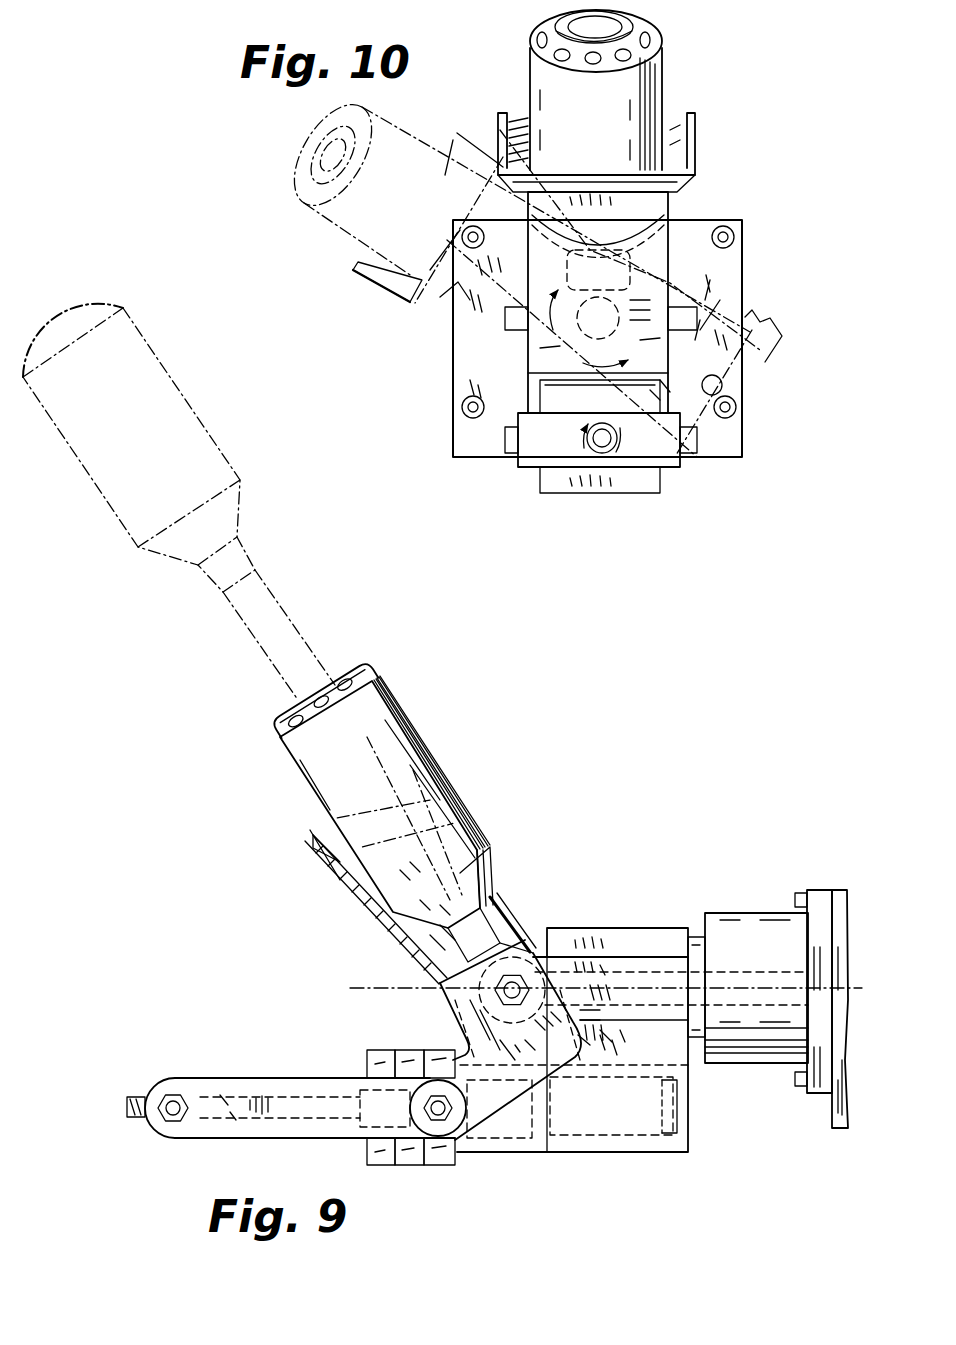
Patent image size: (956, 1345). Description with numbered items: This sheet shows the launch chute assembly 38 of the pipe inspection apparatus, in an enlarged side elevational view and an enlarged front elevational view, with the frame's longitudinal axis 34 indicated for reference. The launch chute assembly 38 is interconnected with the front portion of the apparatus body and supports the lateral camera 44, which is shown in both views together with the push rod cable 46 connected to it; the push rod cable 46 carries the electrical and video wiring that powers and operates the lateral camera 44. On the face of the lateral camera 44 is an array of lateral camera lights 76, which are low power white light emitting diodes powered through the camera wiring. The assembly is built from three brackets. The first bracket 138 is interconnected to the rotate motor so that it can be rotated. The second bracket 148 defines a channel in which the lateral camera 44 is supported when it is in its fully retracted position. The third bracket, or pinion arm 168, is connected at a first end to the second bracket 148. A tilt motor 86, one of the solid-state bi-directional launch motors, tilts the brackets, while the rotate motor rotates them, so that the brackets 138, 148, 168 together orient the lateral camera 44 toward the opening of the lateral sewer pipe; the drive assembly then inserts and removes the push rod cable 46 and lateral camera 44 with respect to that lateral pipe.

In FIG. 9, the longitudinal axis 34 is at (855, 988).
In FIG. 10, the launch chute assembly 38 is at (418, 320).
In FIG. 9, the launch chute assembly 38 is at (625, 1165).
In FIG. 10, the lateral camera 44 is at (645, 90).
In FIG. 9, the lateral camera 44 is at (318, 790).
In FIG. 10, the push rod cable 46 is at (670, 279).
In FIG. 9, the push rod cable 46 is at (298, 636).
In FIG. 10, the lateral camera lights 76 is at (553, 57).
In FIG. 9, the lateral camera lights 76 is at (292, 720).
In FIG. 9, the tilt motor 86 is at (678, 1098).
In FIG. 9, the first bracket 138 is at (660, 956).
In FIG. 9, the second bracket 148 is at (495, 1092).
In FIG. 9, the pinion arm 168 is at (285, 1082).